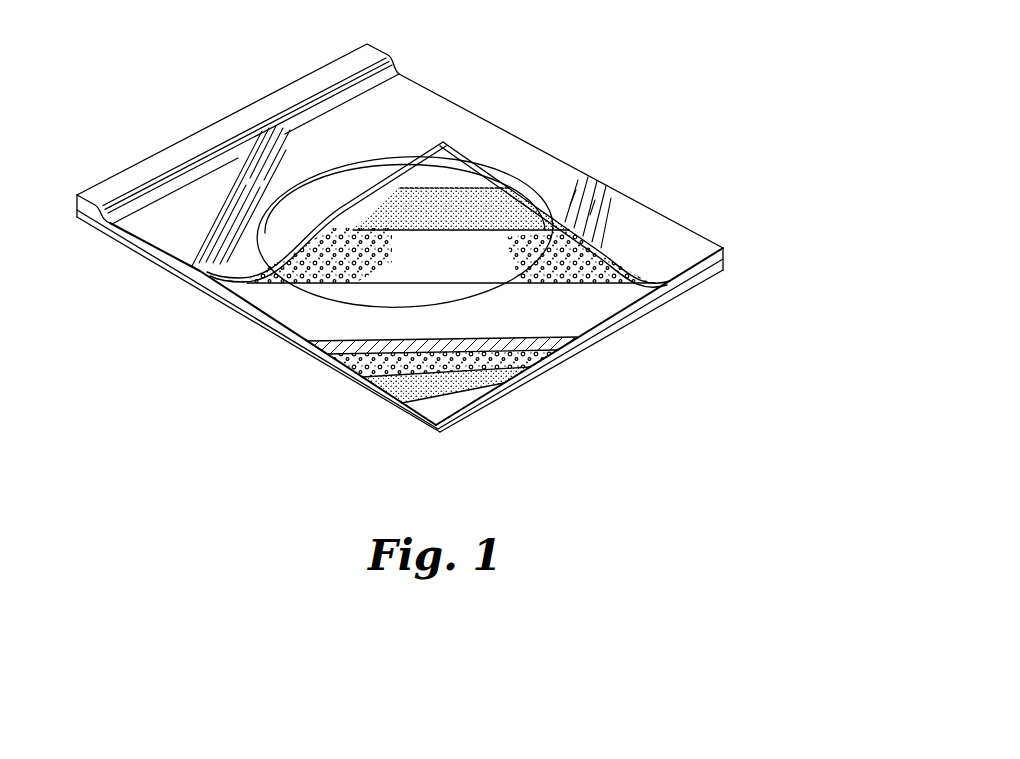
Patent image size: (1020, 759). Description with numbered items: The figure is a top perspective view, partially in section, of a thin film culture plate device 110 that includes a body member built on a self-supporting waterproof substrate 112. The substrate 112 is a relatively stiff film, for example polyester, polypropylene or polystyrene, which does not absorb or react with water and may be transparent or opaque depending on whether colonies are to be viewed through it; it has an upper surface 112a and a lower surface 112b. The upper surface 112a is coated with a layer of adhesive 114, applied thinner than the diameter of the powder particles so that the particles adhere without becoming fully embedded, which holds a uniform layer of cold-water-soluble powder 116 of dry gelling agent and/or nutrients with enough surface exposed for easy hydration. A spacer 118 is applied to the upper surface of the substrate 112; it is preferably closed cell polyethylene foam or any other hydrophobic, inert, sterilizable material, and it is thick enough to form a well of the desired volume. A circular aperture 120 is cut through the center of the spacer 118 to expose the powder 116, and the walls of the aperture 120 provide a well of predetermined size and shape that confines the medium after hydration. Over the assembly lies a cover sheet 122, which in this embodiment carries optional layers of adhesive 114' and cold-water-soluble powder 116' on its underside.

The culture plate device 110 is at (505, 66).
The substrate 112 is at (452, 438).
The upper surface 112a is at (436, 413).
The lower surface 112b is at (407, 422).
The adhesive 114 is at (454, 410).
The optional adhesive 114' is at (483, 172).
The cold-water-soluble powder 116 is at (429, 381).
The optional cold-water-soluble powder 116' is at (609, 195).
The spacer 118 is at (292, 314).
The circular aperture 120 is at (350, 300).
The cover sheet 122 is at (660, 228).